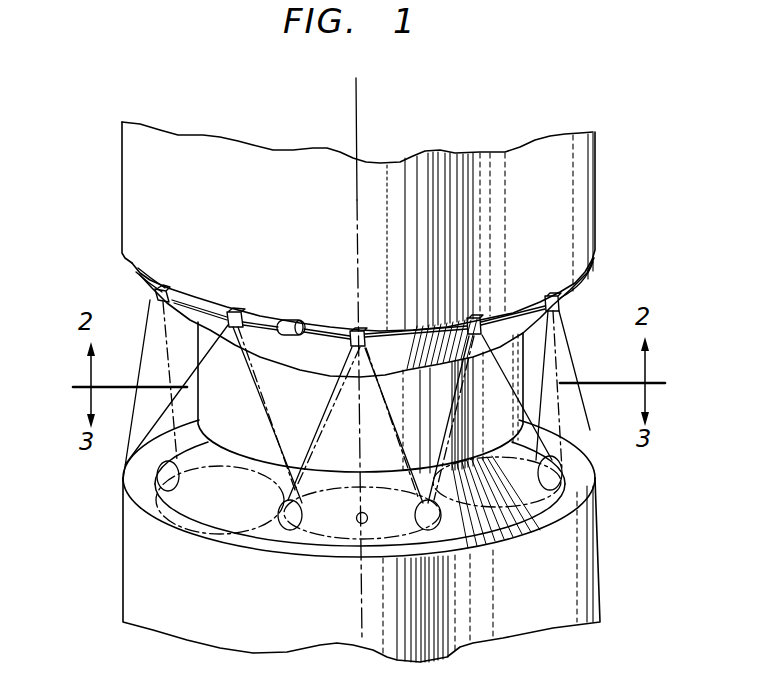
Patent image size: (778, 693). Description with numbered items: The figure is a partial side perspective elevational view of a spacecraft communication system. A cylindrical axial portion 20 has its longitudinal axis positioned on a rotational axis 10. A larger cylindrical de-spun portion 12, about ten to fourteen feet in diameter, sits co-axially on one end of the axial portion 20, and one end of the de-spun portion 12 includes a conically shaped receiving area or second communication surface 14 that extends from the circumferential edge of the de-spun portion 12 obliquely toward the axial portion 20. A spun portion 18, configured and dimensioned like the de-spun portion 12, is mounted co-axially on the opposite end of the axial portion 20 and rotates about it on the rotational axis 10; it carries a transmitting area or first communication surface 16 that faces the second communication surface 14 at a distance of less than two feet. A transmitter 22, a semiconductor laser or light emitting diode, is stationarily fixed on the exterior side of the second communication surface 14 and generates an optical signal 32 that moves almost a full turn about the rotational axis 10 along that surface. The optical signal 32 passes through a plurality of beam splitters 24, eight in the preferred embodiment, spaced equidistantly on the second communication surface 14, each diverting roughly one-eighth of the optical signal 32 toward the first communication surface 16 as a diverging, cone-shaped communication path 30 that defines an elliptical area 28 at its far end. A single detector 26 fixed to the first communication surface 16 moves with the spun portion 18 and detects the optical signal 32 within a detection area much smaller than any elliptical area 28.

The rotational axis 10 is at (355, 114).
The de-spun portion 12 is at (580, 197).
The second communication surface 14 is at (527, 327).
The first communication surface 16 is at (587, 477).
The spun portion 18 is at (585, 590).
The axial portion 20 is at (513, 382).
The transmitter 22 is at (290, 320).
The beam splitters 24 is at (235, 311).
The detector 26 is at (360, 524).
The elliptical area 28 is at (322, 540).
The communication path 30 is at (145, 355).
The optical signal 32 is at (322, 328).